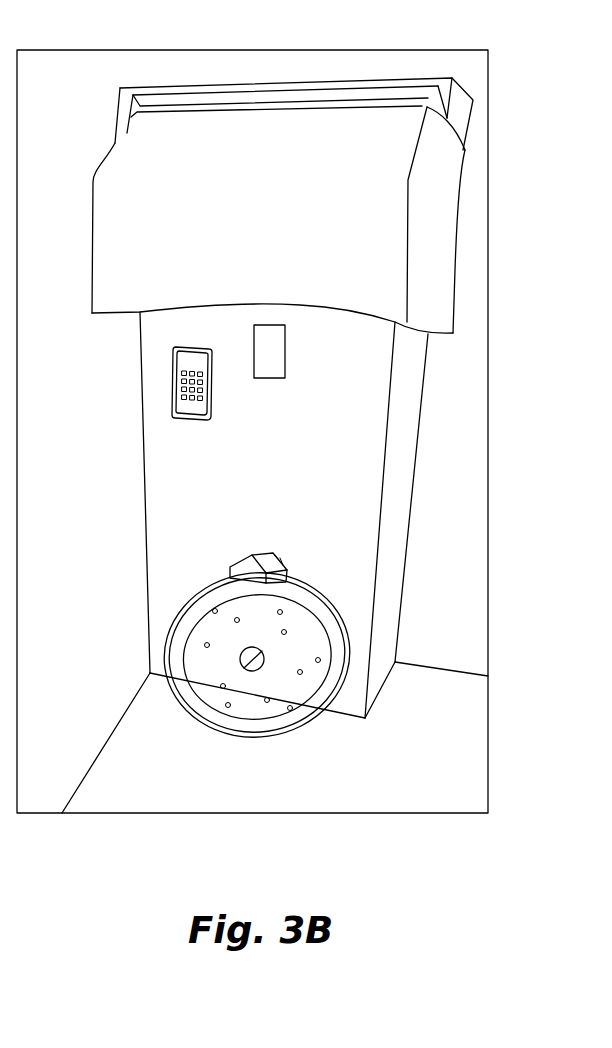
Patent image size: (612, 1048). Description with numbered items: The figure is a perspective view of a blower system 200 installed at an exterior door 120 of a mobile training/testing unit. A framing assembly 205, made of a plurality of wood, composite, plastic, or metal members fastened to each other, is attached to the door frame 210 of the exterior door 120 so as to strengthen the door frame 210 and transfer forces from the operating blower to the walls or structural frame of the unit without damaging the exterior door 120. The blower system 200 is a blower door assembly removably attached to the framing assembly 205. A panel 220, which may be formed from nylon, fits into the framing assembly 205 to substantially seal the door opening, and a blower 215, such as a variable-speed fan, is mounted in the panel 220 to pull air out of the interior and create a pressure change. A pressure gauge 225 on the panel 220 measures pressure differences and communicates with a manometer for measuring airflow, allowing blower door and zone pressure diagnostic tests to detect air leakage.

The blower system 200 is at (97, 87).
The framing assembly 205 is at (190, 92).
The door frame 210 is at (255, 80).
The exterior door 120 is at (294, 77).
The panel 220 is at (210, 480).
The pressure gauge 225 is at (180, 388).
The blower 215 is at (212, 668).